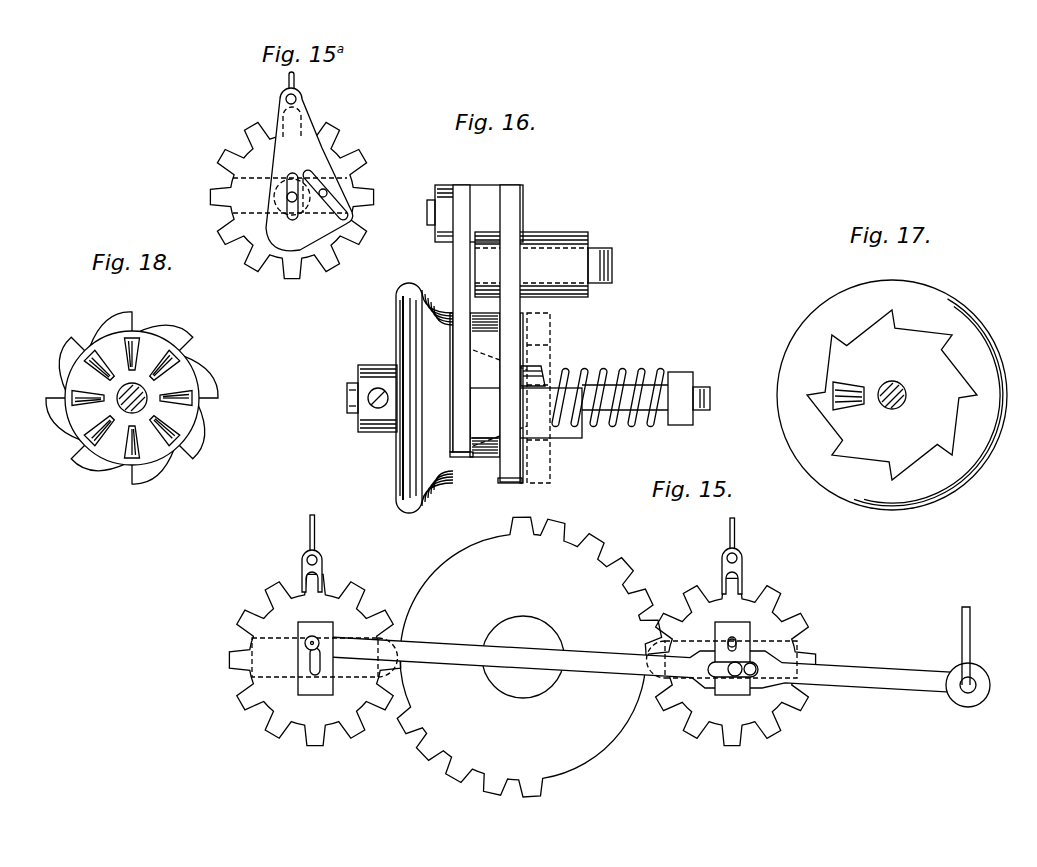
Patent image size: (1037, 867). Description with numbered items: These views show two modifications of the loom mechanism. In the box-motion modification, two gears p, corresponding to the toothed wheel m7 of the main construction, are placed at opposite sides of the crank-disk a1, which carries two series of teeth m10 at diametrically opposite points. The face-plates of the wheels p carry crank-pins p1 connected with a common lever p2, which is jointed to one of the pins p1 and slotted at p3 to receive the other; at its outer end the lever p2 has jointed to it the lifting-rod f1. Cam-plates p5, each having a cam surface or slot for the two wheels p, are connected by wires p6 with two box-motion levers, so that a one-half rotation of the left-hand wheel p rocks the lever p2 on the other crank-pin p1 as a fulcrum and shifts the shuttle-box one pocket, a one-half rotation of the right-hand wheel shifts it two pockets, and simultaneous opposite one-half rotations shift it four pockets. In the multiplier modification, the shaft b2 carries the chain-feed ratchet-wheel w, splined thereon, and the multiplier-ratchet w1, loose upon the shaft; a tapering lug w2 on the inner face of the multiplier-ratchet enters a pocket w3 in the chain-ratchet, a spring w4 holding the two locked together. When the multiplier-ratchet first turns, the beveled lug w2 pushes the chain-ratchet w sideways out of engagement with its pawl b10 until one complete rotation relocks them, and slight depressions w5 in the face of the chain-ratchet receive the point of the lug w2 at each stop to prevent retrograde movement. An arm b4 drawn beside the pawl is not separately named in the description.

In FIG. 15a, the wires p6 is at (300, 88).
In FIG. 15, the wires p6 is at (315, 528).
In FIG. 15a, the cam-plates p5 is at (300, 108).
In FIG. 15, the cam-plates p5 is at (325, 570).
In FIG. 15a, the toothed wheel m7 is at (358, 157).
In FIG. 15, the toothed wheel m7 is at (250, 618).
In FIG. 15a, the wheels p is at (337, 172).
In FIG. 15, the wheels p is at (260, 662).
In FIG. 16, the vertical bar b4 is at (452, 265).
In FIG. 16, the pawl b10 is at (508, 258).
In FIG. 16, the spring w4 is at (597, 372).
In FIG. 18, the spring w4 is at (152, 388).
In FIG. 16, the shaft b2 is at (693, 387).
In FIG. 16, the chain-feed ratchet-wheel w is at (513, 477).
In FIG. 18, the chain-feed ratchet-wheel w is at (165, 332).
In FIG. 17, the chain-feed ratchet-wheel w is at (962, 390).
In FIG. 16, the multiplier-ratchet w1 is at (467, 463).
In FIG. 15, the teeth m10 is at (520, 517).
In FIG. 15, the crank-disk a1 is at (593, 572).
In FIG. 15, the crank-pins p1 is at (305, 643).
In FIG. 15, the lever p2 is at (588, 668).
In FIG. 15, the slot p3 is at (755, 677).
In FIG. 15, the lifting-rod f1 is at (962, 632).
In FIG. 18, the depressions w5 is at (88, 362).
In FIG. 18, the pocket w3 is at (143, 402).
In FIG. 17, the tapering lug w2 is at (892, 395).